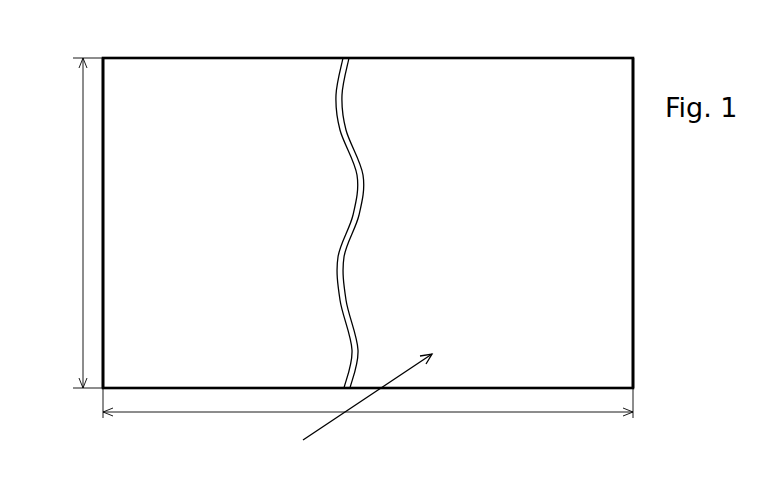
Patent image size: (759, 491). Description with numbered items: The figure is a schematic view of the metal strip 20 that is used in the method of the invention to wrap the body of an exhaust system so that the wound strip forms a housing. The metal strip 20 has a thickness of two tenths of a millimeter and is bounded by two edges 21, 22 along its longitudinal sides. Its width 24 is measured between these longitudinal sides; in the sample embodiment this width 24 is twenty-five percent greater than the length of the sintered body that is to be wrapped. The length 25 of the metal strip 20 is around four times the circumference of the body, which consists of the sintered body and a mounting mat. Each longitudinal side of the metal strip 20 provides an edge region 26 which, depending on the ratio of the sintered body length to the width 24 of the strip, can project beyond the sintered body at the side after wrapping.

The metal strip 20 is at (600, 90).
The edge 21 is at (103, 331).
The edge 22 is at (633, 331).
The width 24 is at (83, 200).
The length 25 is at (445, 412).
The edge region 26 is at (352, 409).